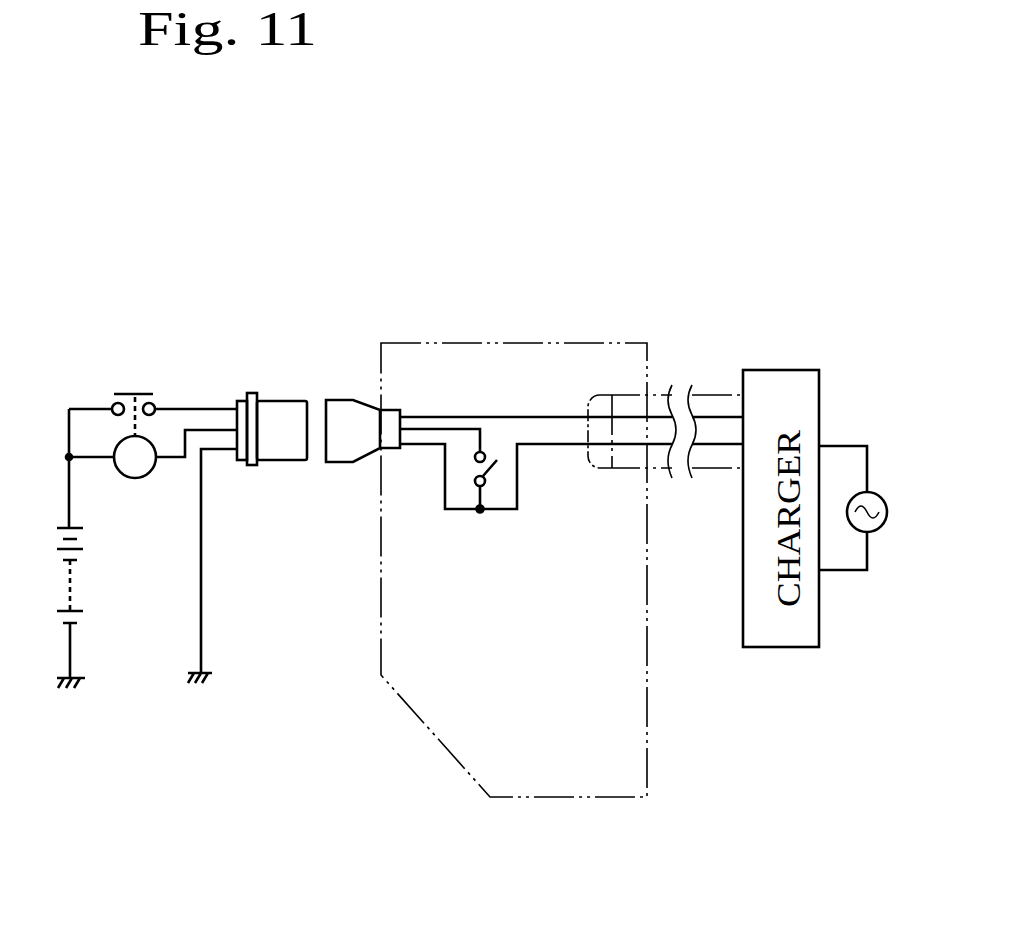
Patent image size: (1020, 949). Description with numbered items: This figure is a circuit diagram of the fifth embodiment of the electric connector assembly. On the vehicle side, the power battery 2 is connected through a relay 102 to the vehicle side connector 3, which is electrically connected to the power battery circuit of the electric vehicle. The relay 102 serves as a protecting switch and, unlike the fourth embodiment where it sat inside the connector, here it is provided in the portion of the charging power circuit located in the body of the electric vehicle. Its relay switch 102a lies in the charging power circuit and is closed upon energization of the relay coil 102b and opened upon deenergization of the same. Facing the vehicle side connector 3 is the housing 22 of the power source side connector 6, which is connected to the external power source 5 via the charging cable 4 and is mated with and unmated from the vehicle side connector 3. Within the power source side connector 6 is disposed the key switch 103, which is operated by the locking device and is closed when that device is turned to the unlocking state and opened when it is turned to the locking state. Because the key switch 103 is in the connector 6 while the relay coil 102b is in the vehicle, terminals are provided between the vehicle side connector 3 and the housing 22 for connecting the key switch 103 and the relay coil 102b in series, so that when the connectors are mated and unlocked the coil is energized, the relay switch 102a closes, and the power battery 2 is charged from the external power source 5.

The power battery 2 is at (52, 562).
The vehicle side connector 3 is at (287, 398).
The charging cable 4 is at (700, 395).
The external power source 5 is at (870, 490).
The power source side connector 6 is at (525, 342).
The housing 22 is at (350, 400).
The relay 102 is at (147, 452).
The relay switch 102a is at (133, 376).
The relay coil 102b is at (131, 480).
The key switch 103 is at (465, 472).